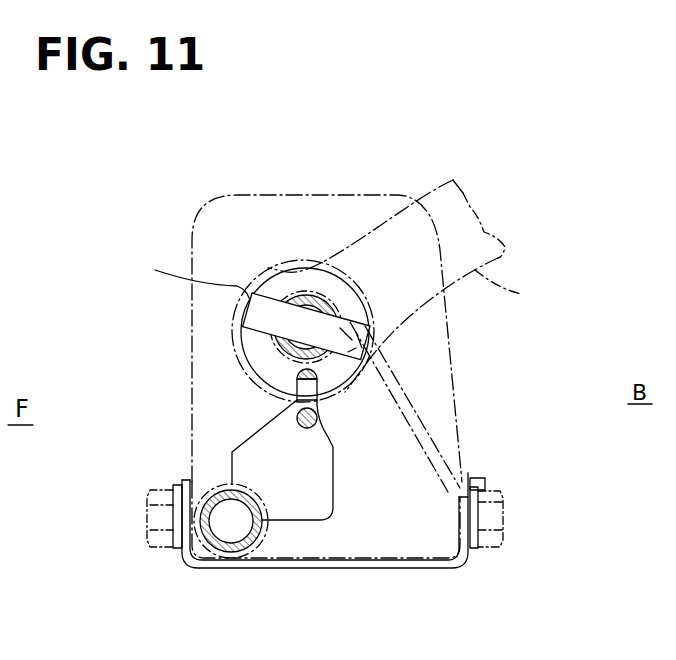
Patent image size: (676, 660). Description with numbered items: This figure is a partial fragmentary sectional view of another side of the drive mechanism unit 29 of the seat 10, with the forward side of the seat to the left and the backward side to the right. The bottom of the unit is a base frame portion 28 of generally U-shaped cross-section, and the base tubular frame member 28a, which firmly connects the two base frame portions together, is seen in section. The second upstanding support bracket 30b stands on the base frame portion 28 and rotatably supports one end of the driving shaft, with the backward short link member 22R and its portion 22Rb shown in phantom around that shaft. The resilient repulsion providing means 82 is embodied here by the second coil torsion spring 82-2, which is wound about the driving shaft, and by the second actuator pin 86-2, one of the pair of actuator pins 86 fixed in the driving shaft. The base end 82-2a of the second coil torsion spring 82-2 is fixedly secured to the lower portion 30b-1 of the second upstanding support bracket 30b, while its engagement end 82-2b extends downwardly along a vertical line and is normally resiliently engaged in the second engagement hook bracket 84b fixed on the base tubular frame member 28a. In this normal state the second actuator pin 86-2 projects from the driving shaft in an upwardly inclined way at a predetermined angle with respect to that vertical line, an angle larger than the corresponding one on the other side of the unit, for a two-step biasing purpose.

The seat 10 is at (553, 149).
The backward short link member 22R is at (522, 294).
The lever end portion 22Rb is at (172, 273).
The base frame portion 28 is at (296, 578).
The base tubular frame member 28a is at (222, 490).
The drive mechanism unit 29 is at (157, 360).
The second upstanding support bracket 30b is at (453, 366).
The lower portion of the second upstanding support bracket 30b-1 is at (468, 474).
The resilient repulsion providing means 82 is at (326, 248).
The second coil torsion spring 82-2 is at (300, 292).
The base end of the second coil torsion spring 82-2a is at (428, 437).
The engagement end of the second coil torsion spring 82-2b is at (320, 421).
The second engagement hook bracket 84b is at (322, 500).
The actuator pin 86 is at (258, 254).
The second actuator pin 86-2 is at (268, 296).